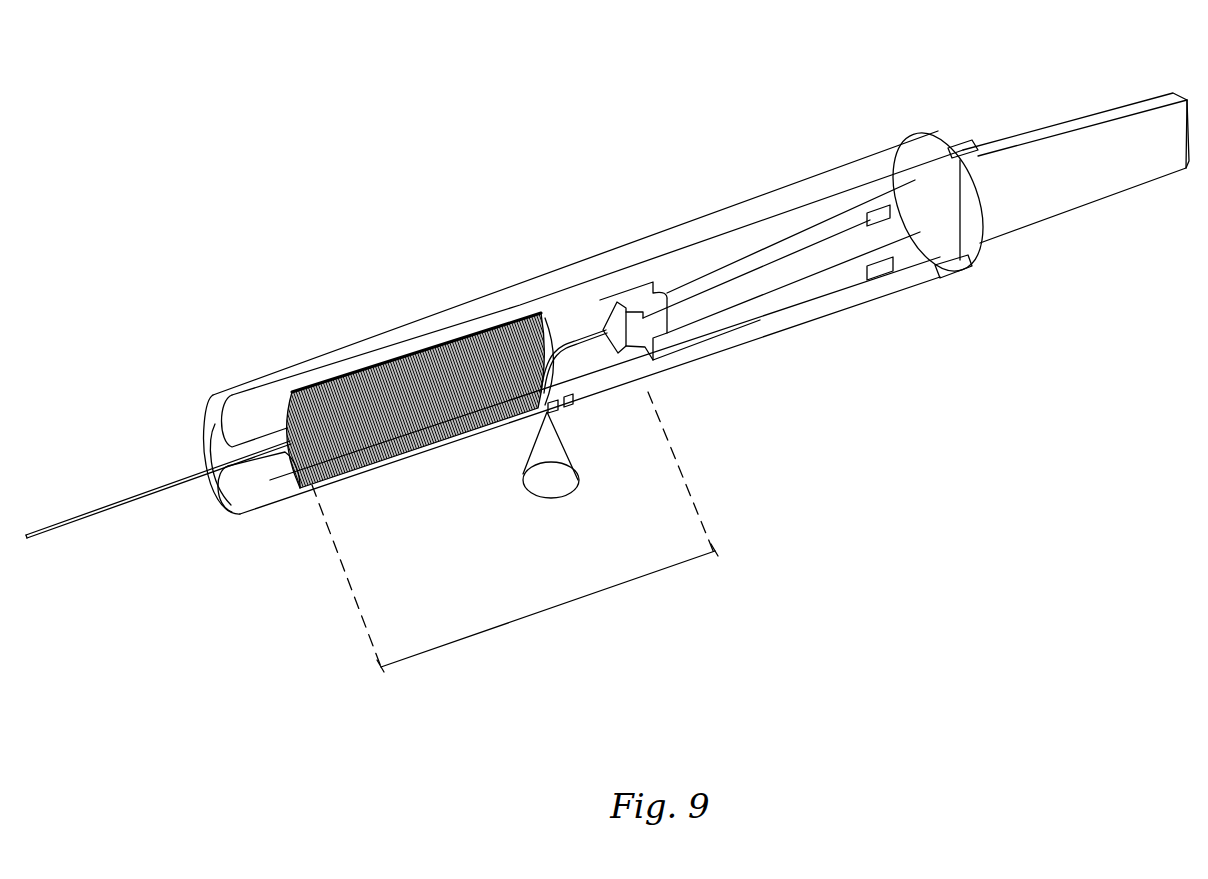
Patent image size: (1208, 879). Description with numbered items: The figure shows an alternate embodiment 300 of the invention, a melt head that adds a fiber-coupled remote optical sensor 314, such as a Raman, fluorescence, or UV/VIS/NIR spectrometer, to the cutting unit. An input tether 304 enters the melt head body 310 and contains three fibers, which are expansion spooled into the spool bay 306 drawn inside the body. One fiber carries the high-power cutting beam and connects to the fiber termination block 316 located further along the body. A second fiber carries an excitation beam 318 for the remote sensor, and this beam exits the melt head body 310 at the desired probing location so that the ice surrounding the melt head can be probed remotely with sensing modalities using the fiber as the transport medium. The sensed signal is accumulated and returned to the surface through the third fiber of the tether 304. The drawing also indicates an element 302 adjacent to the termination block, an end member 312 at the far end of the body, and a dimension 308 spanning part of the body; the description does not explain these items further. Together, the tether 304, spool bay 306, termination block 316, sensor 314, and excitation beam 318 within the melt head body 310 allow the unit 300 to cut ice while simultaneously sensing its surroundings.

The alternate embodiment 300 is at (352, 110).
The connecting rod 302 is at (760, 283).
The input tether 304 is at (194, 468).
The spool bay 306 is at (397, 458).
The insertion distance 308 is at (515, 532).
The melt head body 310 is at (443, 323).
The actuation button 312 is at (1065, 178).
The fiber-coupled remote optical sensor 314 is at (556, 410).
The fiber termination block 316 is at (640, 316).
The excitation beam 318 is at (553, 453).